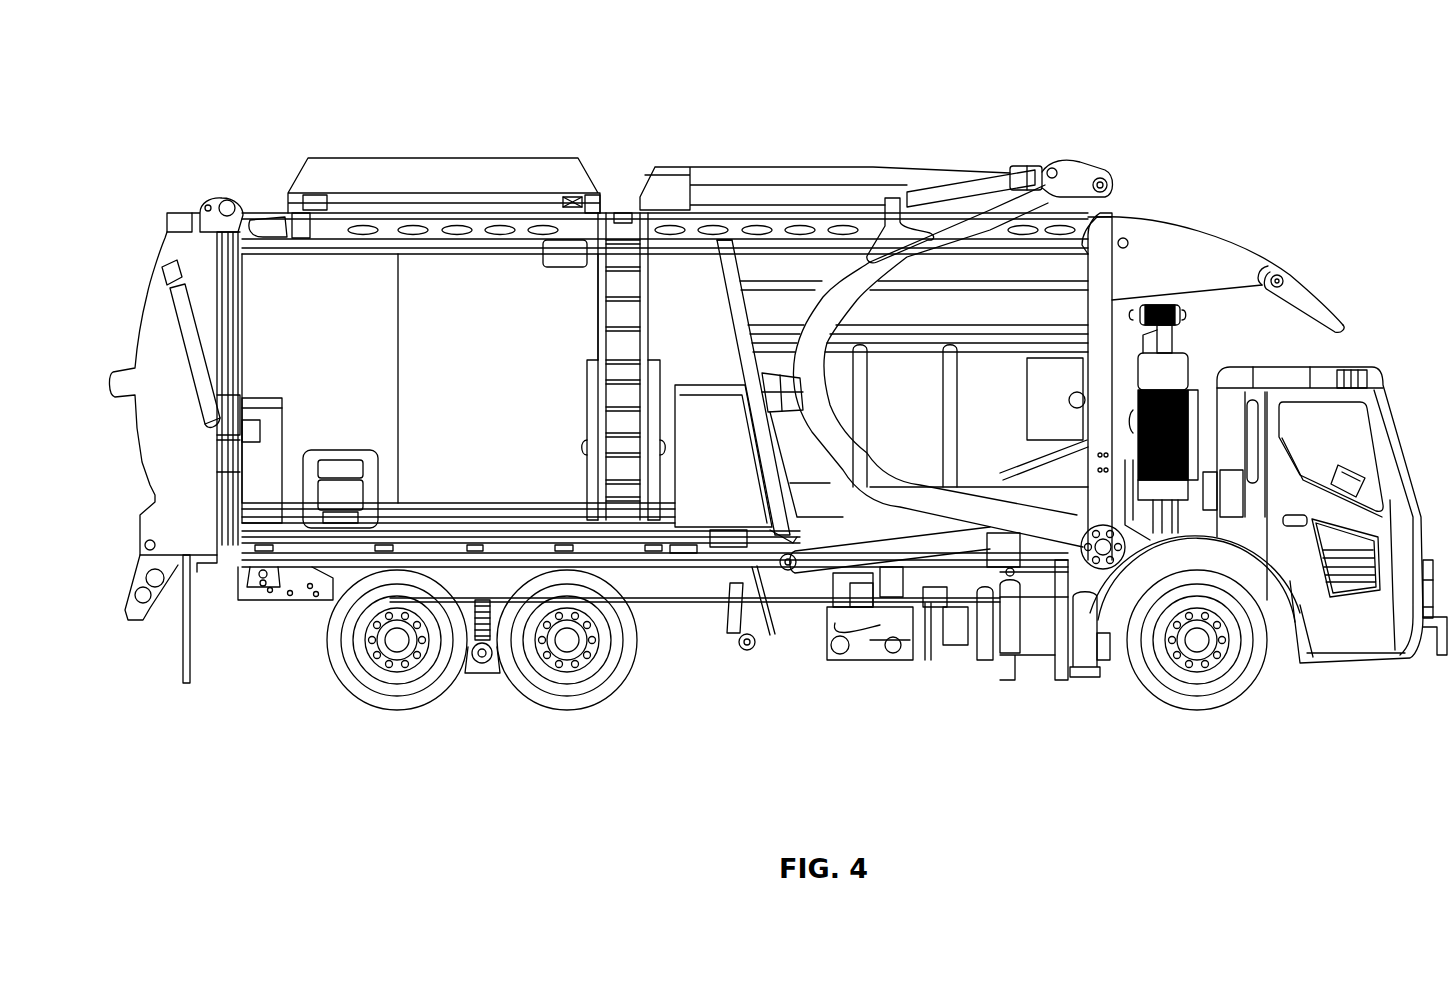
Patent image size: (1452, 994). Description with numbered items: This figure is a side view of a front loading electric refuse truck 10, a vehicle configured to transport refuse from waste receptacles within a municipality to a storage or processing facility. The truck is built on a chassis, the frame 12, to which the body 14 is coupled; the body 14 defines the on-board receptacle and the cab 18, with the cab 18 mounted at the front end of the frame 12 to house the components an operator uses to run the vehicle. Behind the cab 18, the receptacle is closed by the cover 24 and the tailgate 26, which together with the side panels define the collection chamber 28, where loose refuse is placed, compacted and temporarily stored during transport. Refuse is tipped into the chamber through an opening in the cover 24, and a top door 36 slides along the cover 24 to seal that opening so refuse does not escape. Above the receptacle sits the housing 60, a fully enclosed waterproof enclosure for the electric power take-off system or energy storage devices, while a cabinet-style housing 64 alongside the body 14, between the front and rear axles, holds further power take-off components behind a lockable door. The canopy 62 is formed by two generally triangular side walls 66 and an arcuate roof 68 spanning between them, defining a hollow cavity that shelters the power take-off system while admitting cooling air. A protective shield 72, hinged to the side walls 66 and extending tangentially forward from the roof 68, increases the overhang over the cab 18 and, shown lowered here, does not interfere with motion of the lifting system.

The refuse truck 10 is at (1283, 93).
The frame 12 is at (636, 570).
The body 14 is at (520, 130).
The cab 18 is at (1311, 396).
The cover 24 is at (812, 185).
The tailgate 26 is at (150, 327).
The collection chamber 28 is at (467, 280).
The top door 36 is at (316, 172).
The housing 60 is at (1013, 257).
The canopy 62 is at (1216, 247).
The housing 64 is at (697, 495).
The side walls 66 is at (1257, 273).
The roof 68 is at (1160, 222).
The protective shield 72 is at (1322, 297).